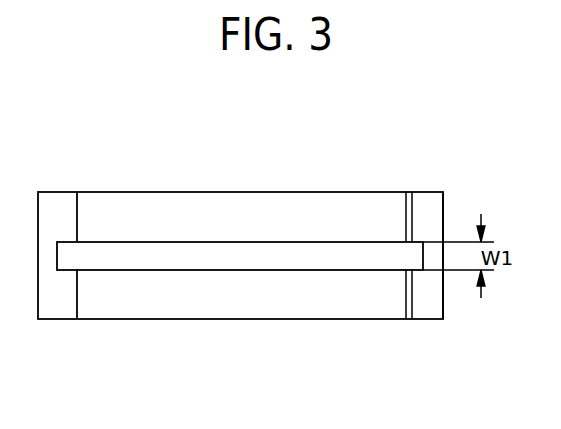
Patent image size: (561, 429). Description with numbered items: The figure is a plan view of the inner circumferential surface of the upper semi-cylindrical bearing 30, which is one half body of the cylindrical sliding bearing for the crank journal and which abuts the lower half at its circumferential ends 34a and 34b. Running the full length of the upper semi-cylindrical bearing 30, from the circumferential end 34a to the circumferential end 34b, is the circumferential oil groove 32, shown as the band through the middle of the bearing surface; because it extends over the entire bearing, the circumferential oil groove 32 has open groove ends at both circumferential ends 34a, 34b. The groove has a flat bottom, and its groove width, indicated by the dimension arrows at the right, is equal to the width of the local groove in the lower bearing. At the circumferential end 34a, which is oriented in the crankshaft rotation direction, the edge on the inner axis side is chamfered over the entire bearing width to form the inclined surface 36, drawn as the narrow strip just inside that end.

The upper semi-cylindrical bearing 30 is at (188, 200).
The circumferential oil groove 32 is at (323, 243).
The circumferential end 34a is at (433, 208).
The circumferential end 34b is at (62, 201).
The inclined surface 36 is at (409, 192).